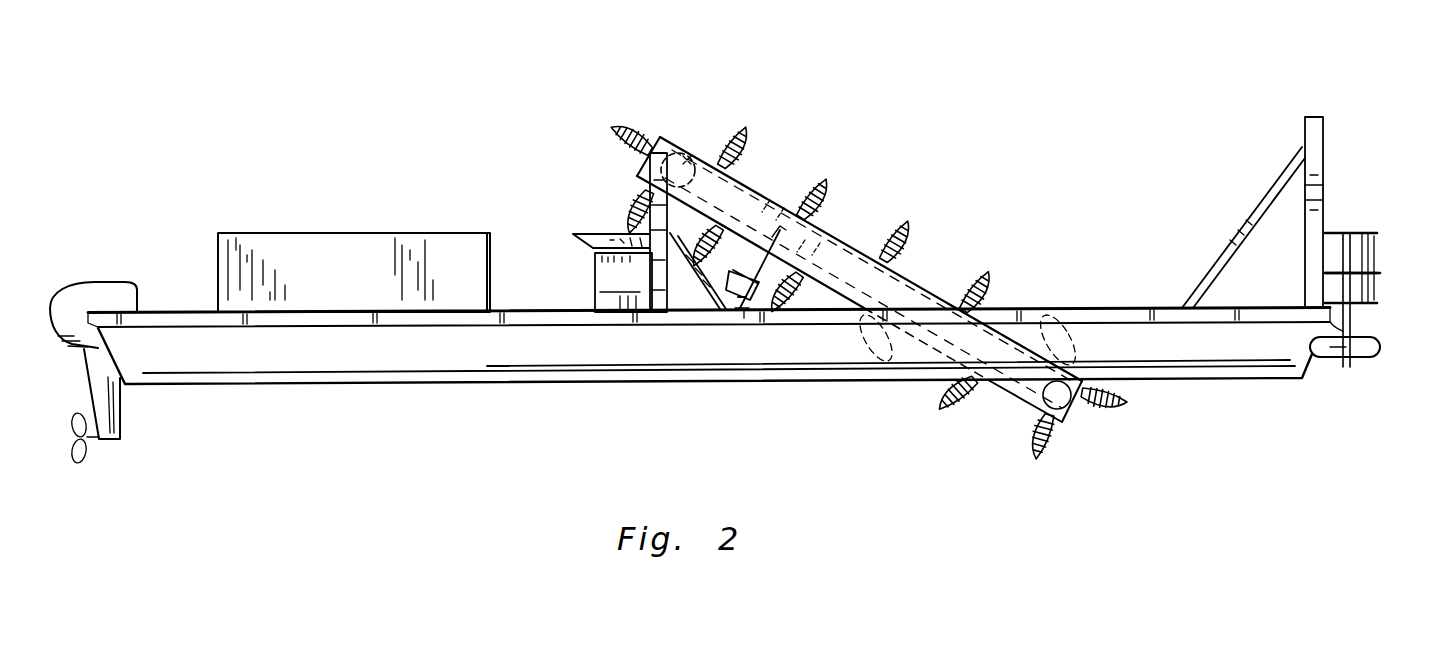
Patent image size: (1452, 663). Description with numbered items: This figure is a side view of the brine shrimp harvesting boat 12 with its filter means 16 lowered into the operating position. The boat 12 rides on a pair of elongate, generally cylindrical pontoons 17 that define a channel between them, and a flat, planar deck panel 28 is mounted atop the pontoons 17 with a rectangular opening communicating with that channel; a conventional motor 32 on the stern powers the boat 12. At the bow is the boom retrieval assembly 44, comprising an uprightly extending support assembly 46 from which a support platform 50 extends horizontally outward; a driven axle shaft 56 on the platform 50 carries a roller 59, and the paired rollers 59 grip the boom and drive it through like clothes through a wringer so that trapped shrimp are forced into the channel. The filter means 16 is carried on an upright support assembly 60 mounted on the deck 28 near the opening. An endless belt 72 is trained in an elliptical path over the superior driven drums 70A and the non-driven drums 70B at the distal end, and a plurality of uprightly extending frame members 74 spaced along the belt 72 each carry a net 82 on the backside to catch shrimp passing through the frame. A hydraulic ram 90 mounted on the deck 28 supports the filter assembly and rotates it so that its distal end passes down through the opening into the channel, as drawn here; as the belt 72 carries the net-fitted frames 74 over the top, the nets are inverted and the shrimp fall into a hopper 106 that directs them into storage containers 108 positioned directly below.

The boat 12 is at (187, 337).
The filter means 16 is at (668, 140).
The pontoons 17 is at (350, 369).
The deck panel 28 is at (502, 310).
The motor 32 is at (100, 298).
The assembly 44 is at (1373, 275).
The support assembly 46 is at (1303, 147).
The support platform 50 is at (1363, 235).
The axle shaft 56 is at (1353, 325).
The roller 59 is at (1370, 360).
The support assembly 60 is at (640, 187).
The superior driven drums 70A is at (687, 160).
The non-driven conveyor belt drums 70B is at (1067, 393).
The endless belt 72 is at (767, 200).
The frame members 74 is at (830, 183).
The net 82 is at (913, 247).
The hydraulic ram 90 is at (745, 312).
The hopper 106 is at (594, 236).
The storage containers 108 is at (623, 282).